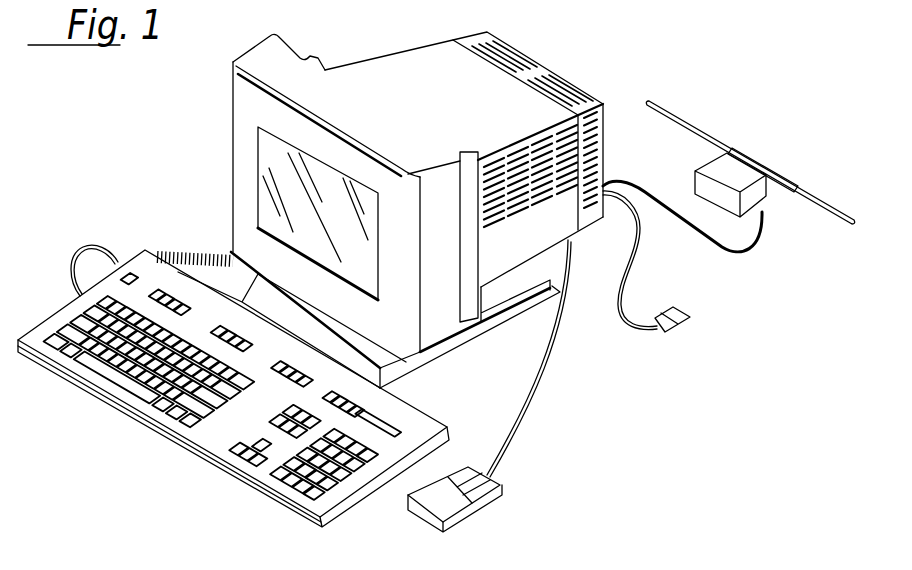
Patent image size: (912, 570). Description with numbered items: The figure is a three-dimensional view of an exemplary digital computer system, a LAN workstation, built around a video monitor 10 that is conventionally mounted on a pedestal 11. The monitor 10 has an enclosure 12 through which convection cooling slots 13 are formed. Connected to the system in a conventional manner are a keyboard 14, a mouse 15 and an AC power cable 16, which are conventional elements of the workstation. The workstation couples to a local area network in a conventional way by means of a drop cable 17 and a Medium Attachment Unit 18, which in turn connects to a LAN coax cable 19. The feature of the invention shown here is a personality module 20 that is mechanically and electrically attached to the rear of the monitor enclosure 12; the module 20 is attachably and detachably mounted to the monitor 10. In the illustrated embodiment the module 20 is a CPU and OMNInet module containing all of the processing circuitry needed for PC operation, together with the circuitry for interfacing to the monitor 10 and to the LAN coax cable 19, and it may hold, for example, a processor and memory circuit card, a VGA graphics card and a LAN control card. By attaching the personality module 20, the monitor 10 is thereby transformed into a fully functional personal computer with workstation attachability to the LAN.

The video monitor 10 is at (220, 115).
The pedestal 11 is at (468, 333).
The enclosure 12 is at (377, 62).
The convection cooling slots 13 is at (521, 163).
The keyboard 14 is at (147, 422).
The mouse 15 is at (500, 489).
The AC power cable 16 is at (628, 333).
The drop cable 17 is at (725, 253).
The Medium Attachment Unit 18 is at (696, 182).
The LAN coax cable 19 is at (702, 130).
The personality module 20 is at (503, 43).